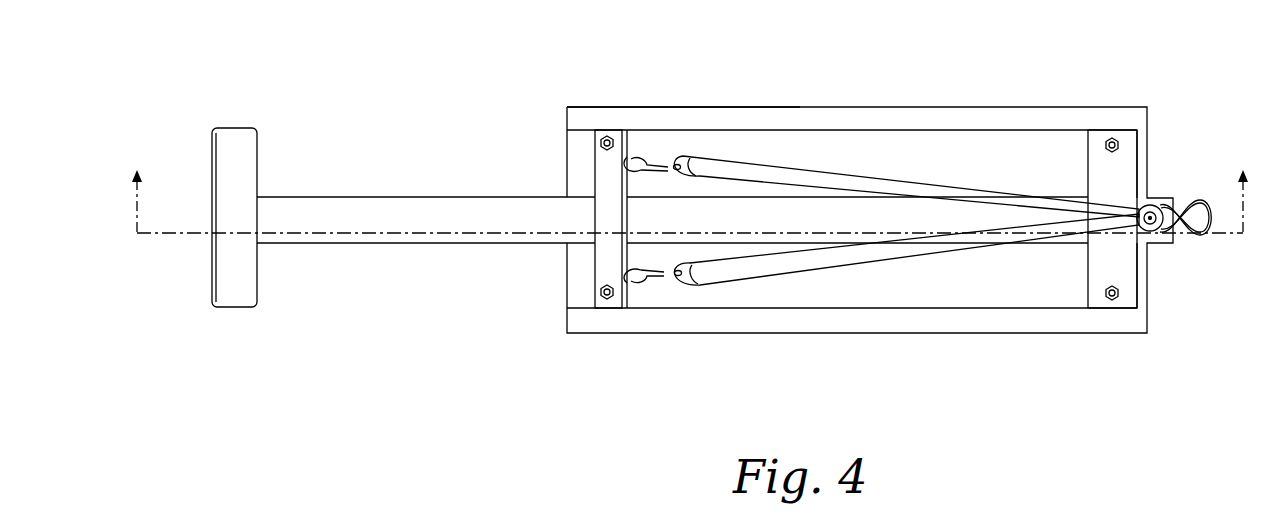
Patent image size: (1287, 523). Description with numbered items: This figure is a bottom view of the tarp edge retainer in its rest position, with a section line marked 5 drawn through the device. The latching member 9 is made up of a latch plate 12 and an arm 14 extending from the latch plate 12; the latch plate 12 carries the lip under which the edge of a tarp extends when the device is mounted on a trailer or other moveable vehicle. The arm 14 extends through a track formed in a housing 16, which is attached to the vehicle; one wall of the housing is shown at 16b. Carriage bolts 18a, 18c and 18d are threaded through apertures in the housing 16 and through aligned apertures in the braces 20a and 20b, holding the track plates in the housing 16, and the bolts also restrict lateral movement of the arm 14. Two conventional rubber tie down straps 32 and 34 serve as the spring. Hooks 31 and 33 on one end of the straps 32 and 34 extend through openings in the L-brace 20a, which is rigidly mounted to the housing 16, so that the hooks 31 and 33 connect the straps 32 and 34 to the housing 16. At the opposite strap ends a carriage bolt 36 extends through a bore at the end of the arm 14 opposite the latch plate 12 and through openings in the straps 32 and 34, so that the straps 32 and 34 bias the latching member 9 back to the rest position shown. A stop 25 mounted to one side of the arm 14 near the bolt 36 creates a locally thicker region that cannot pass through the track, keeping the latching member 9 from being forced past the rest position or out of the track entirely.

The section line 5- 5 is at (690, 182).
The latching member 9 is at (293, 288).
The latch plate 12 is at (243, 163).
The arm 14 is at (363, 210).
The housing 16 is at (617, 117).
The frame side wall 16b is at (601, 142).
The carriage bolt 18a is at (598, 292).
The carriage bolt 18c is at (1121, 136).
The carriage bolt 18d is at (1115, 300).
The L-brace 20a is at (603, 182).
The brace 20b is at (1120, 172).
The stop 25 is at (1143, 245).
The hook 31 is at (640, 158).
The rubber tie down strap 32 is at (723, 172).
The hook 33 is at (647, 283).
The rubber tie down strap 34 is at (733, 270).
The carriage bolt 36 is at (1185, 238).